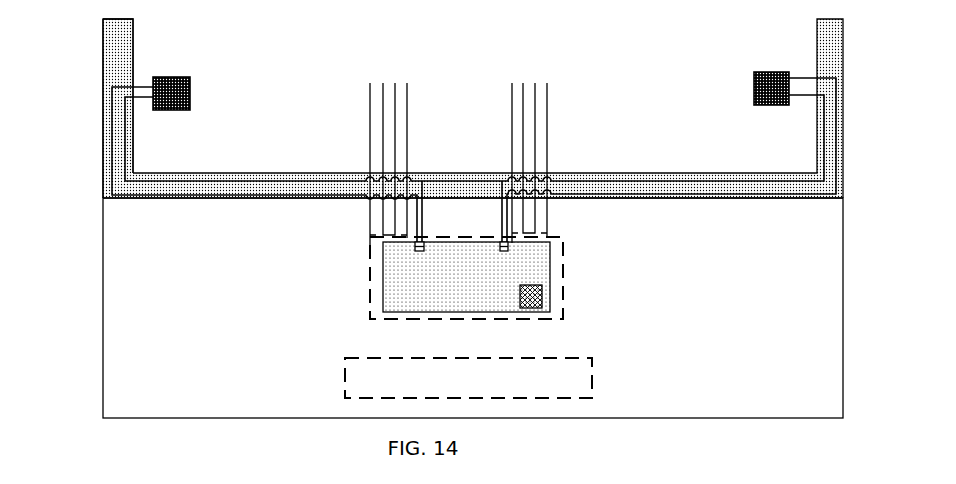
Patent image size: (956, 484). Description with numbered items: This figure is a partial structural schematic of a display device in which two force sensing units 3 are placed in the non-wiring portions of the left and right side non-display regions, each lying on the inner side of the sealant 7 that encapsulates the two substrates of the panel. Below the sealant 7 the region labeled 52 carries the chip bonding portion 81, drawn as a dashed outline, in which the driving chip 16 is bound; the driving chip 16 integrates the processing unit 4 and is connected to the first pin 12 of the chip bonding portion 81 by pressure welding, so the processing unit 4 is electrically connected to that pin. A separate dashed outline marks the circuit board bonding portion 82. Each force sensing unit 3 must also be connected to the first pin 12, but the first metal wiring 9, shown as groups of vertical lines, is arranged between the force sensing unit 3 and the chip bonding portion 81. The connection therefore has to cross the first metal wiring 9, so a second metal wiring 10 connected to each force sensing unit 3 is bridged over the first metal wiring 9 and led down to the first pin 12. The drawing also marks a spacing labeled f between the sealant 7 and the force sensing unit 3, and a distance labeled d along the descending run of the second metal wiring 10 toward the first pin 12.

The force sensing unit 3 is at (187, 97).
The processing unit 4 is at (541, 298).
The sealant 7 is at (108, 117).
The first metal wiring 9 is at (370, 112).
The second metal wiring 10 is at (607, 190).
The first pin 12 is at (507, 248).
The driving chip 16 is at (385, 307).
The housing 52 is at (103, 303).
The chip bonding portion 81 is at (368, 268).
The circuit board bonding portion 82 is at (345, 380).
The gap f is at (133, 80).
The distance d is at (496, 200).